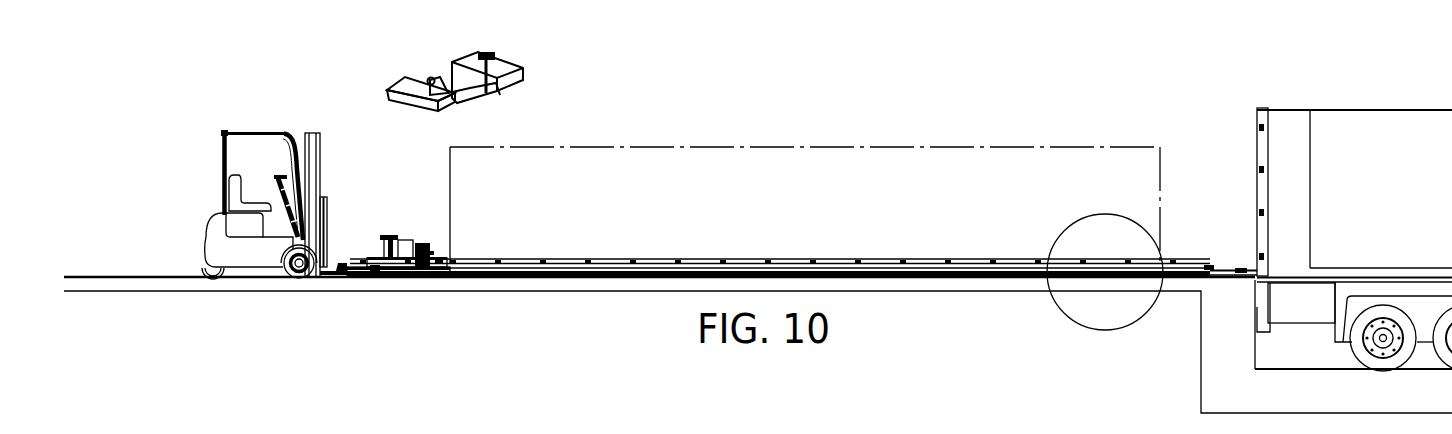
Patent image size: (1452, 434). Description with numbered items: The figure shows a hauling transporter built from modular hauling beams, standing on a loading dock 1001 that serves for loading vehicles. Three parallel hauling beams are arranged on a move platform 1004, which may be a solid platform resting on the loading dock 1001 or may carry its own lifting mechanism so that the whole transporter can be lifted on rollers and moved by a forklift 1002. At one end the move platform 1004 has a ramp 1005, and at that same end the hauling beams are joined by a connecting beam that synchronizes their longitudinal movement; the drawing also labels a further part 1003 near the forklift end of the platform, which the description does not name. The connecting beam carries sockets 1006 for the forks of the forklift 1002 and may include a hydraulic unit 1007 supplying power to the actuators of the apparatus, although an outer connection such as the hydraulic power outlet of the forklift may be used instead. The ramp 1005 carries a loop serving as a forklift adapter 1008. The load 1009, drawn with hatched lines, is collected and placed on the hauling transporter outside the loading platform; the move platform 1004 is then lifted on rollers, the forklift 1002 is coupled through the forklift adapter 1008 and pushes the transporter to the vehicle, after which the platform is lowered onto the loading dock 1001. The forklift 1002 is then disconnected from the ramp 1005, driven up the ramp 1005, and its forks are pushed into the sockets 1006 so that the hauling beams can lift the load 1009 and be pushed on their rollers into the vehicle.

The loading dock 1001 is at (802, 268).
The forklift 1002 is at (222, 128).
The base plate 1003 is at (365, 270).
The move platform 1004 is at (545, 278).
The ramp 1005 is at (1275, 128).
The sockets 1006 is at (365, 267).
The hydraulic unit 1007 is at (399, 237).
The forklift adapter 1008 is at (513, 63).
The load 1009 is at (795, 147).